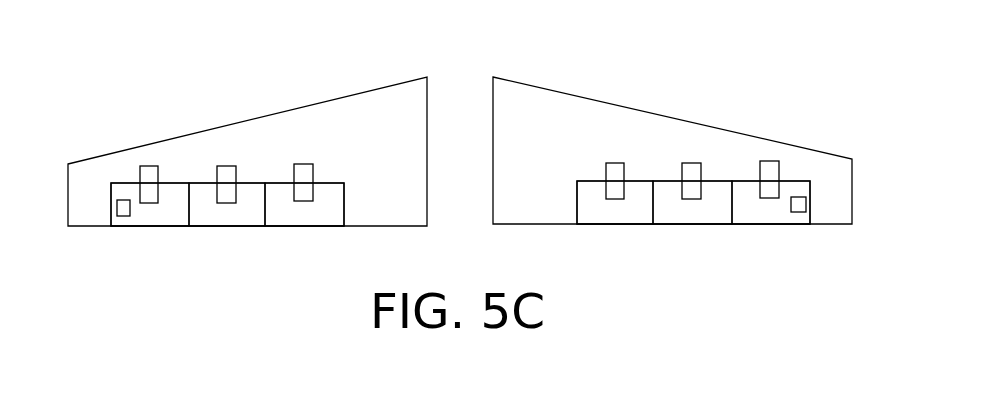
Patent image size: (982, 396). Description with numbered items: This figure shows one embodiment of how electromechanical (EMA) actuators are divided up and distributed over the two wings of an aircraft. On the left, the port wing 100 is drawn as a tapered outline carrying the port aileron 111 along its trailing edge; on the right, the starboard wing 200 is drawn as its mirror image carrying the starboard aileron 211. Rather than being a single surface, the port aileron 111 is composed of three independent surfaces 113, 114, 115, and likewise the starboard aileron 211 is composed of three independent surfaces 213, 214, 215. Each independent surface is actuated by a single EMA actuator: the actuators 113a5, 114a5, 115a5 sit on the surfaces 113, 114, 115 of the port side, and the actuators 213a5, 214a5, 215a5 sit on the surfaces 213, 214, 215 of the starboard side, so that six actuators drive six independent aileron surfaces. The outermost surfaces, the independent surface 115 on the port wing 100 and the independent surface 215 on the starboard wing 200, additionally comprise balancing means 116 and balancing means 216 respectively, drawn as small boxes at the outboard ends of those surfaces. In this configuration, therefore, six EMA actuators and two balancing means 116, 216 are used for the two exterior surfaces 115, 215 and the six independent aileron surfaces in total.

The port wing 100 is at (312, 104).
The port aileron 111 is at (176, 282).
The independent surface 113 is at (320, 213).
The independent surface 114 is at (232, 236).
The independent surface 115 is at (158, 238).
The balancing means 116 is at (123, 210).
The EMA actuator 113a5 is at (308, 173).
The EMA actuator 114a5 is at (223, 173).
The EMA actuator 115a5 is at (148, 173).
The starboard wing 200 is at (610, 100).
The starboard aileron 211 is at (742, 278).
The independent surface 213 is at (610, 212).
The independent surface 214 is at (685, 212).
The independent surface 215 is at (775, 212).
The balancing means 216 is at (802, 205).
The EMA actuator 213a5 is at (613, 171).
The EMA actuator 214a5 is at (693, 168).
The EMA actuator 215a5 is at (768, 168).